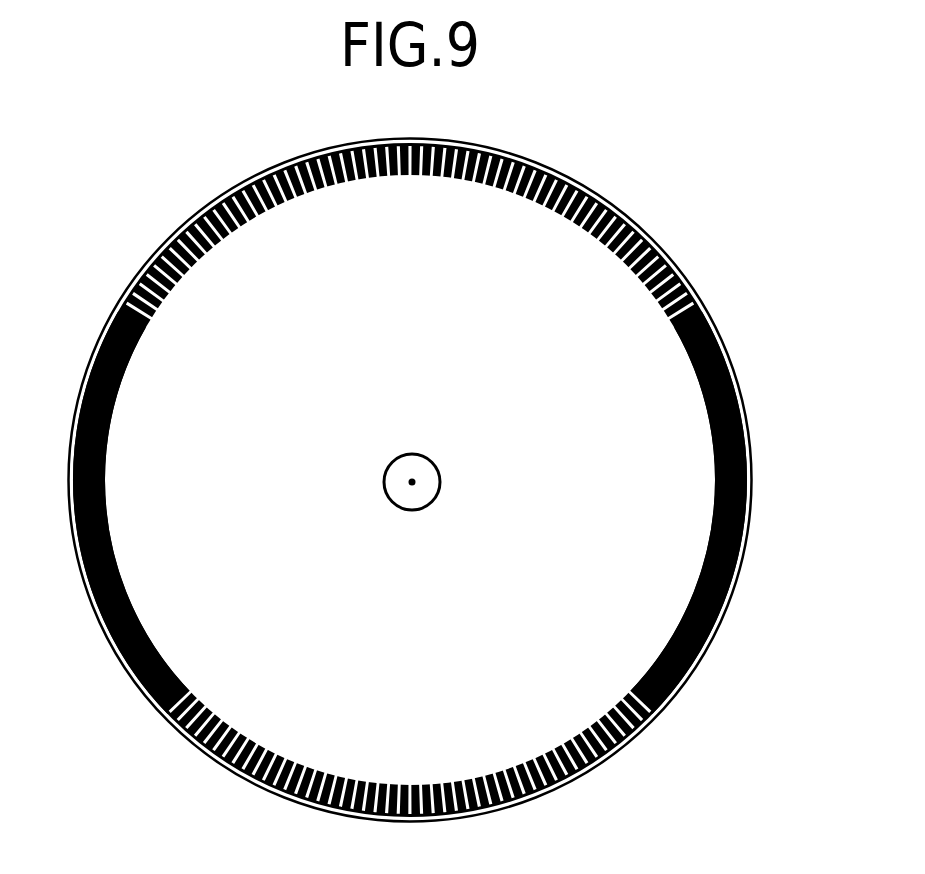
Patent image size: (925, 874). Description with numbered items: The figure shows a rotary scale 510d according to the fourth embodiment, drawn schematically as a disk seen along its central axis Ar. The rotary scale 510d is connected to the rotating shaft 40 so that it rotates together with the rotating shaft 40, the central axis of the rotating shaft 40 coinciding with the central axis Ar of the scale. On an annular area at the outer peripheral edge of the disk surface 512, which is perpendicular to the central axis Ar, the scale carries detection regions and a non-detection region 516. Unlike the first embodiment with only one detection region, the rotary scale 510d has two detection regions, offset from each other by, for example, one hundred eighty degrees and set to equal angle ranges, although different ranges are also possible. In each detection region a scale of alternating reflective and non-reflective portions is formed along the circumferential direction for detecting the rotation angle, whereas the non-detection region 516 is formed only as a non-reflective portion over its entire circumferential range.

The encoder disk (scale) 510d is at (785, 123).
The disk body 512 is at (677, 398).
The non-pattern (solid) region 516 is at (107, 626).
The rotation shaft 40 is at (440, 481).
The rotation axis Ar is at (412, 482).